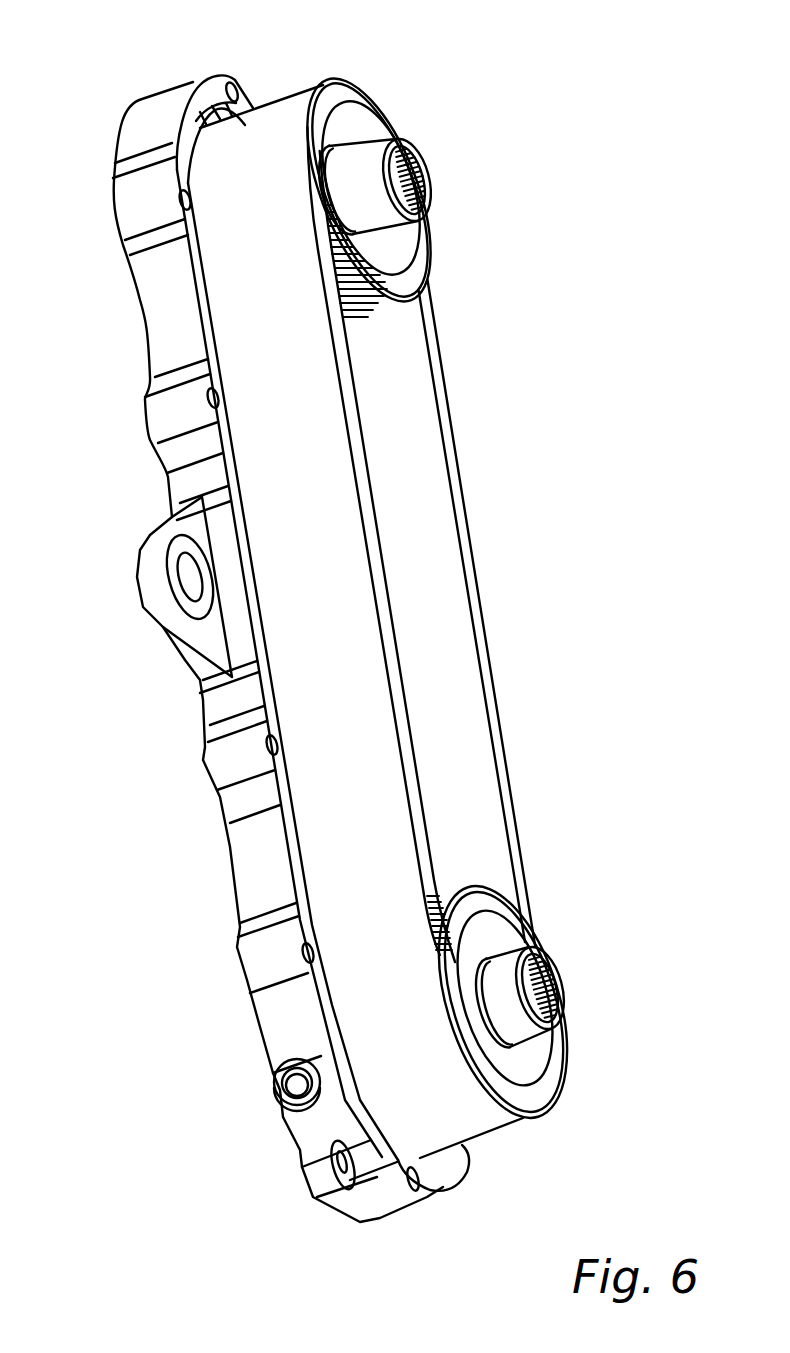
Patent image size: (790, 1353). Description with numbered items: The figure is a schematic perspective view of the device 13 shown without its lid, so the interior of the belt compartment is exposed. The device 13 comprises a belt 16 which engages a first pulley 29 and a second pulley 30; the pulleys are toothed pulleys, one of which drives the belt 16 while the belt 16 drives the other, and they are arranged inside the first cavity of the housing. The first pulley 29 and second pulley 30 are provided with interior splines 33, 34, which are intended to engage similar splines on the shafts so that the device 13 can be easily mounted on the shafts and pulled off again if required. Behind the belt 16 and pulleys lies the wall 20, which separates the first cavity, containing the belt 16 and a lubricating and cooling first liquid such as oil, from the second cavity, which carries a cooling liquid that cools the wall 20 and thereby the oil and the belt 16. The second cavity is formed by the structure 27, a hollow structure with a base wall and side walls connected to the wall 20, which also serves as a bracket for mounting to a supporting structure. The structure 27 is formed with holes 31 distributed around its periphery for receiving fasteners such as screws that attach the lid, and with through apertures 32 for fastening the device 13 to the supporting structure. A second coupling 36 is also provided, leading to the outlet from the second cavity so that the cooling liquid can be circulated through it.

The device 13 is at (431, 53).
The belt 16 is at (433, 458).
The wall 20 is at (193, 127).
The structure 27 is at (243, 866).
The first pulley 29 is at (426, 284).
The second pulley 30 is at (555, 1096).
The holes 31 is at (210, 403).
The through apertures 32 is at (180, 577).
The interior splines 33 is at (408, 180).
The interior splines 34 is at (557, 978).
The second coupling 36 is at (274, 1097).